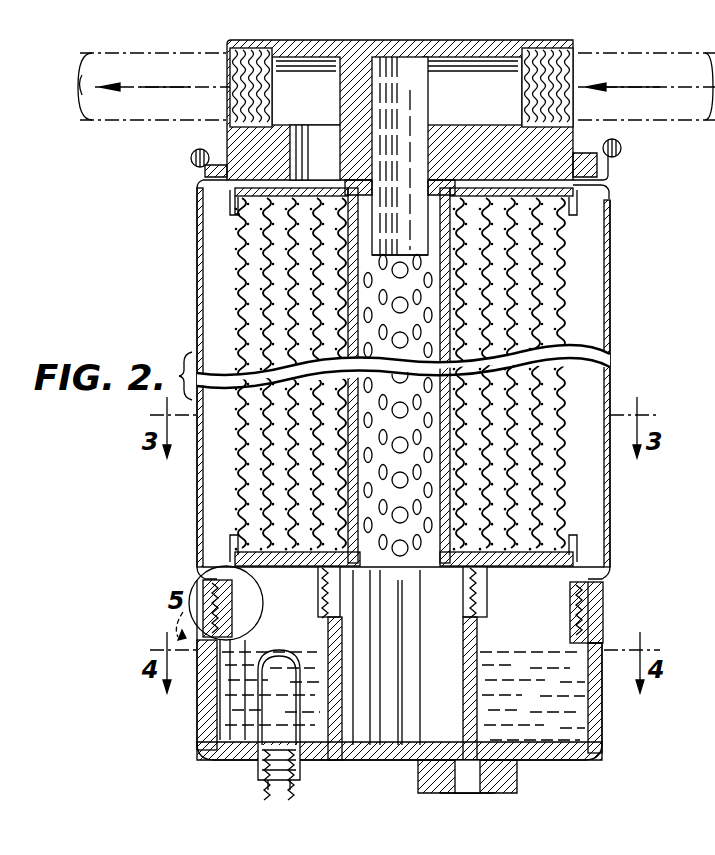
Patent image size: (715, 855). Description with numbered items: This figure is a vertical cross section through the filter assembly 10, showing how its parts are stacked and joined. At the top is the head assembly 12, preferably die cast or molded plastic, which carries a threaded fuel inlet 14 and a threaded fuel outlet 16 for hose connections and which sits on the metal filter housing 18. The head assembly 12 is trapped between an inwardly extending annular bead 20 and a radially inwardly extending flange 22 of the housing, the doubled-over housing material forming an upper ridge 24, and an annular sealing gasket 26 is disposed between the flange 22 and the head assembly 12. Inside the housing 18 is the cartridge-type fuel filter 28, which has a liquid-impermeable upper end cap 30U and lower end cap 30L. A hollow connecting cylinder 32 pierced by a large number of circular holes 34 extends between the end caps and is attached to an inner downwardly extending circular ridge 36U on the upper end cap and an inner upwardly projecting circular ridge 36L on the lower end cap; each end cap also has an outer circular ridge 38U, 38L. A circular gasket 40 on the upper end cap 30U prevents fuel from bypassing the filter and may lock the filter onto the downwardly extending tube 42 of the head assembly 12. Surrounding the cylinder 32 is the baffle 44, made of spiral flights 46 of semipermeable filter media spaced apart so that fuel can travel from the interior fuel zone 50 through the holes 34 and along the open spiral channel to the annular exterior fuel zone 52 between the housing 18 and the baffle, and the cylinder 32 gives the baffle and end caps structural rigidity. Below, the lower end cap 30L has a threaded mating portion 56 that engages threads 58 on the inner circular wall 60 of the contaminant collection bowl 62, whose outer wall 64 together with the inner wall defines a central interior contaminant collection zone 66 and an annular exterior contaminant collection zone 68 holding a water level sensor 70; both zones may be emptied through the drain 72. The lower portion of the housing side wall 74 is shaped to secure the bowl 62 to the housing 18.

The filter assembly 10 is at (636, 503).
The head assembly 12 is at (376, 141).
The fuel inlet 14 is at (461, 105).
The fuel outlet 16 is at (281, 110).
The filter housing 18 is at (611, 334).
The annular bead 20 is at (603, 194).
The flange 22 is at (585, 152).
The upper ridge 24 is at (623, 148).
The annular sealing gasket 26 is at (196, 170).
The cartridge-type fuel filter 28 is at (234, 201).
The upper end cap 30U is at (580, 200).
The lower end cap 30L is at (575, 554).
The hollow connecting cylinder 32 is at (448, 400).
The circular holes 34 is at (406, 323).
The inner downwardly extending circular ridge 36U is at (321, 152).
The inner upwardly projecting circular ridge 36L is at (393, 657).
The outer circular ridge 38U is at (580, 212).
The outer circular ridge 38L is at (235, 536).
The circular gasket 40 is at (410, 182).
The downwardly extending tube 42 is at (385, 242).
The baffle 44 is at (402, 384).
The flights 46 is at (300, 278).
The interior fuel zone 50 is at (390, 506).
The exterior fuel zone 52 is at (582, 520).
The mating portion 56 is at (484, 594).
The threads 58 is at (483, 608).
The inner circular wall 60 is at (402, 665).
The contaminant collection bowl 62 is at (411, 720).
The outer wall 64 is at (205, 706).
The central interior contaminant collection zone 66 is at (398, 743).
The annular exterior contaminant collection zone 68 is at (573, 720).
The water level sensor 70 is at (254, 738).
The drain 72 is at (508, 773).
The side wall 74 is at (208, 561).